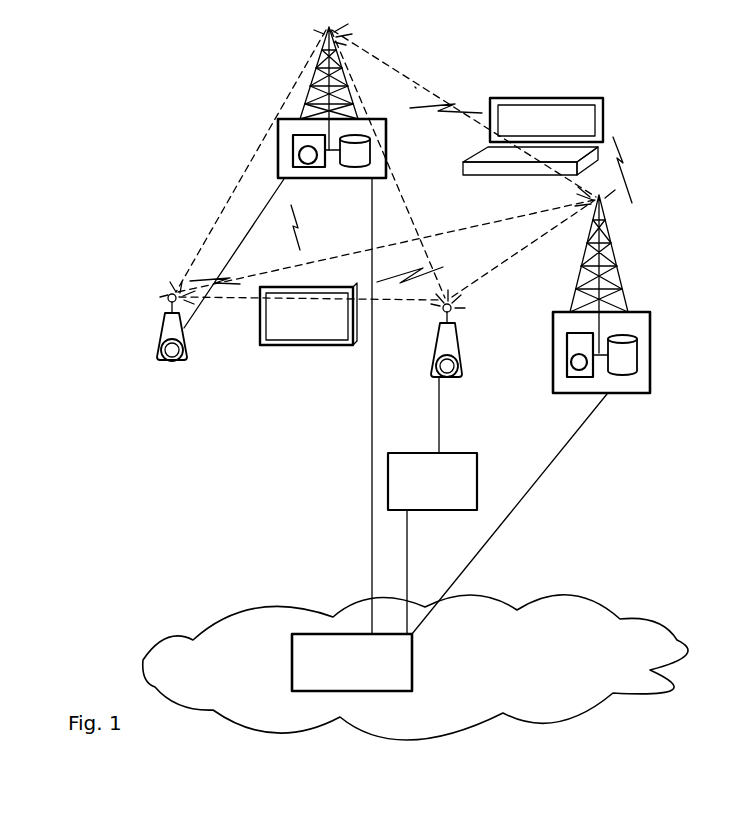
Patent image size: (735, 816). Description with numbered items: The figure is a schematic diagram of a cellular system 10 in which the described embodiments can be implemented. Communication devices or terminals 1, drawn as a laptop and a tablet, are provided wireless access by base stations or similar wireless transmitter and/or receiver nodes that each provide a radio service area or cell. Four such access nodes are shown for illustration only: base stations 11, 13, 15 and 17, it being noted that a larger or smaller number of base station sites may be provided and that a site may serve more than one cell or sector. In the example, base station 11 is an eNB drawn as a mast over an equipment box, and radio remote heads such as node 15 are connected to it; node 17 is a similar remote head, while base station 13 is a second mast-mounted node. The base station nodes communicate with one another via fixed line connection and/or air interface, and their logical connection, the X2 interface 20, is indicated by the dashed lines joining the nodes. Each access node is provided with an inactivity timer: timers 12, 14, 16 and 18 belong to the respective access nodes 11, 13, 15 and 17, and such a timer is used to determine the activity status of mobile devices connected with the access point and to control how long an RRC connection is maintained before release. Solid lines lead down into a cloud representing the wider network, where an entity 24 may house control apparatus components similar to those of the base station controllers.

The communication device 1 is at (598, 110).
The cellular system 10 is at (128, 132).
The base station 11 is at (279, 138).
The timer 12 is at (298, 160).
The base station 13 is at (634, 380).
The timer 14 is at (572, 375).
The radio remote head 15 is at (164, 325).
The timer 16 is at (172, 350).
The base station 17 is at (446, 342).
The timer 18 is at (440, 375).
The X2 interface 20 is at (415, 87).
The entity 24 is at (305, 648).